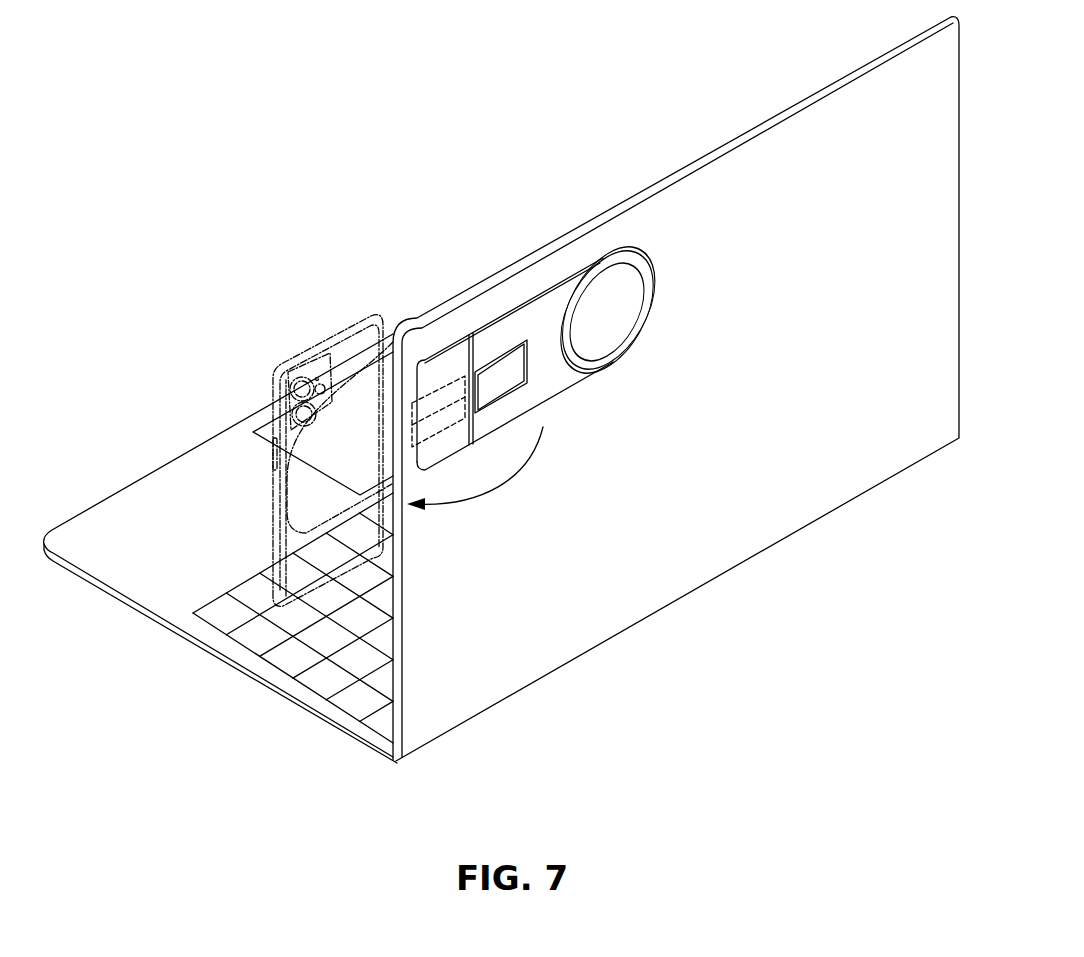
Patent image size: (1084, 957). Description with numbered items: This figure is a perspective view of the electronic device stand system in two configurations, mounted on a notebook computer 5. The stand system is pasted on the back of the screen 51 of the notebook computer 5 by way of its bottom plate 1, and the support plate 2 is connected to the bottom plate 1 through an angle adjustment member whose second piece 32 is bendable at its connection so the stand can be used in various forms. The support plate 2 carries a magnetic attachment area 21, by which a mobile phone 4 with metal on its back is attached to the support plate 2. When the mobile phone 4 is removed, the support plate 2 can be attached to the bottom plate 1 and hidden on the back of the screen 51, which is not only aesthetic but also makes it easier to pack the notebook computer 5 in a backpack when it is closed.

The bottom plate 1 is at (531, 313).
The support plate 2 is at (467, 316).
The magnetic attachment area 21 is at (630, 266).
The second piece 32 is at (490, 383).
The mobile phone 4 is at (328, 343).
The notebook computer 5 is at (163, 585).
The screen 51 is at (677, 537).